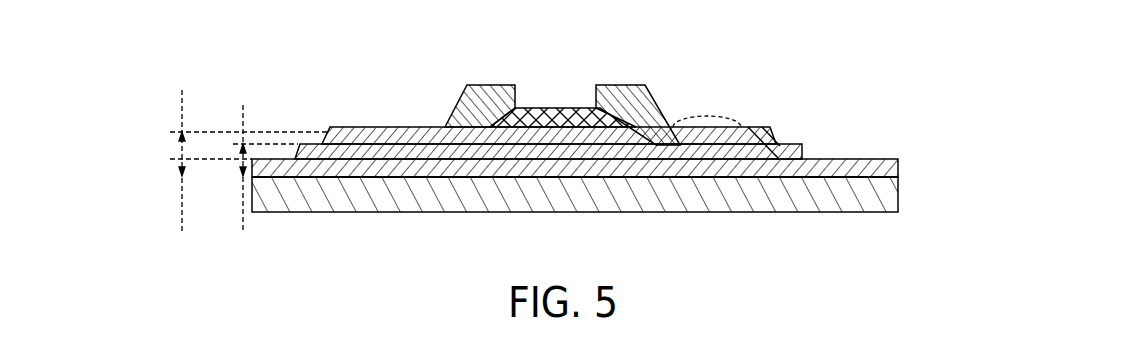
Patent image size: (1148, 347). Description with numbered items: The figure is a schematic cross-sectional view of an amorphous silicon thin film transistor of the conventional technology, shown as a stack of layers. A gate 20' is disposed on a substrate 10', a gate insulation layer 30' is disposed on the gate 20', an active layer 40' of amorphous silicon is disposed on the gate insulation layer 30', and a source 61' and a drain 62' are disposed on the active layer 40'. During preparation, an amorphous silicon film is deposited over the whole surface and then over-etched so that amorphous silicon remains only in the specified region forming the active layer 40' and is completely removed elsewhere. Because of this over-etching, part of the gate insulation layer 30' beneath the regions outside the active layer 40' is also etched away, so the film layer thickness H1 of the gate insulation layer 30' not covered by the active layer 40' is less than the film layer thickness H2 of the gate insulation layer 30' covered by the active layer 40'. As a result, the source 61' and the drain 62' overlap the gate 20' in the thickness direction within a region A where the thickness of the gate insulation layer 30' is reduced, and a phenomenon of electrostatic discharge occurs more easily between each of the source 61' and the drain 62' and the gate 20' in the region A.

The substrate 10' is at (609, 194).
The gate 20' is at (575, 214).
The gate insulation layer 30' is at (609, 168).
The active layer 40' is at (563, 88).
The source 61' is at (485, 77).
The drain 62' is at (638, 86).
The region A is at (717, 118).
The film layer thickness H1 is at (242, 163).
The film layer thickness H2 is at (257, 169).